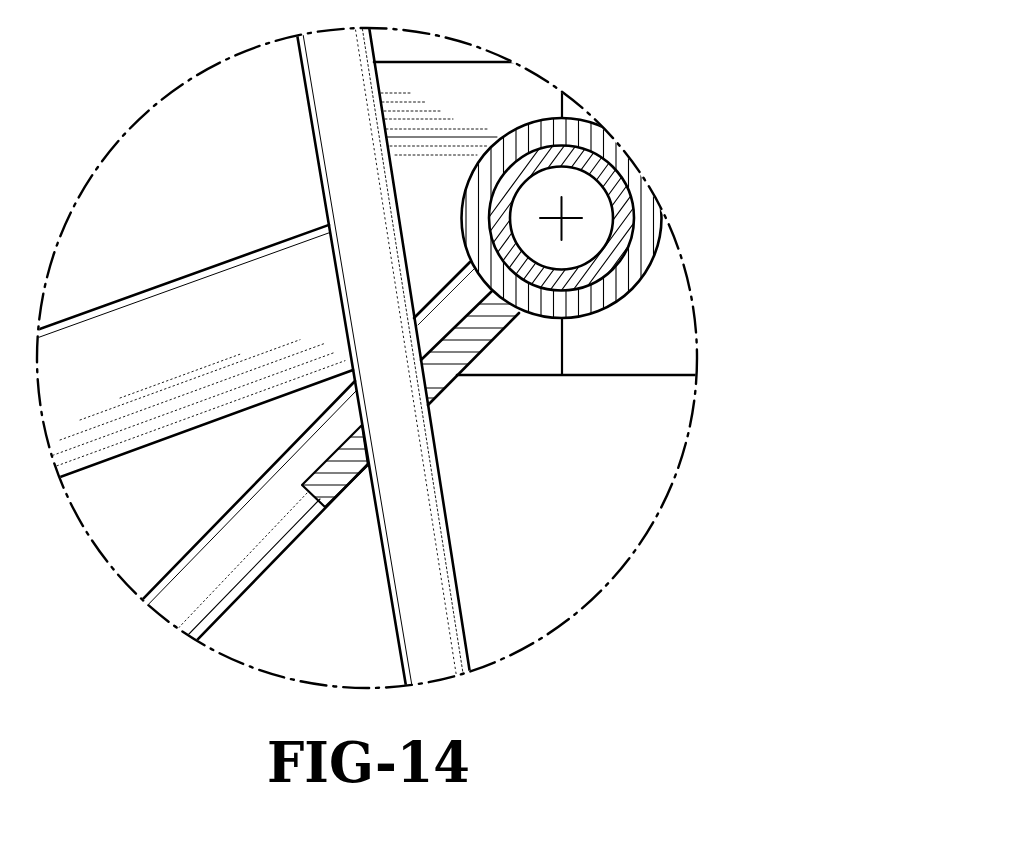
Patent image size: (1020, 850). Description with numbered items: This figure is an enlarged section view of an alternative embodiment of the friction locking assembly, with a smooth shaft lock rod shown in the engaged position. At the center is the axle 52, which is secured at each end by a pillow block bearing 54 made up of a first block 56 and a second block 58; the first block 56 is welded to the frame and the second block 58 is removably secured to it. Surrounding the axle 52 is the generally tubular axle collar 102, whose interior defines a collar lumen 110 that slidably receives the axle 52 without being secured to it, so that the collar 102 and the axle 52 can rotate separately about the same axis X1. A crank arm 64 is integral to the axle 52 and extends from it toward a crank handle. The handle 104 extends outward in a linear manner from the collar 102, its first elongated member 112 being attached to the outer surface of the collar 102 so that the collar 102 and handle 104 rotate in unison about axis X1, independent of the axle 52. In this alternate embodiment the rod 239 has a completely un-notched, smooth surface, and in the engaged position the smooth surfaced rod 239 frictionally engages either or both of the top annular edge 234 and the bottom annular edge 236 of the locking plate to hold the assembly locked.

The rod 239 is at (332, 154).
The crank arm 64 is at (131, 320).
The handle 104 is at (246, 617).
The first elongated member 112 is at (261, 548).
The bottom annular edge 236 is at (370, 465).
The top annular edge 234 is at (423, 362).
The first block 56 is at (652, 362).
The pillow block bearing 54 is at (519, 93).
The second block 58 is at (533, 72).
The axle 52 is at (605, 231).
The axle collar 102 is at (583, 313).
The collar lumen 110 is at (620, 259).
The axis X1 is at (567, 216).